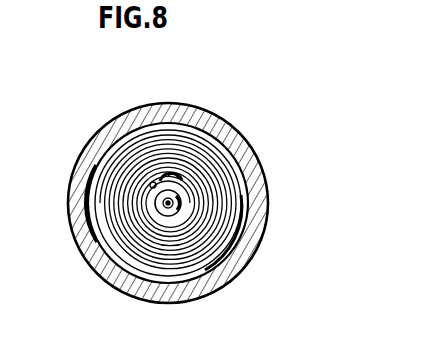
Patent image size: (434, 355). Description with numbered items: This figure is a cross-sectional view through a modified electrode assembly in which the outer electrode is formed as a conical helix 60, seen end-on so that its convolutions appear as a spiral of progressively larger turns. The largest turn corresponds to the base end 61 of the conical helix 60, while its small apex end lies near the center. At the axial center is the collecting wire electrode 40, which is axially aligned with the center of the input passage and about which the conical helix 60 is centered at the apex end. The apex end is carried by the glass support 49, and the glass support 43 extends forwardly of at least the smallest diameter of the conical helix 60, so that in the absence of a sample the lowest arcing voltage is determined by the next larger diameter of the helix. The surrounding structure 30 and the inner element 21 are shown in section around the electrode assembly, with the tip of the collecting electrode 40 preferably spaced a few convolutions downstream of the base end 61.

The housing 30 is at (140, 115).
The base end 61 is at (103, 167).
The spiral spring 21 is at (153, 191).
The glass support 49 is at (185, 182).
The conical helix 60 is at (227, 200).
The glass support 43 is at (180, 213).
The collecting wire electrode 40 is at (163, 210).